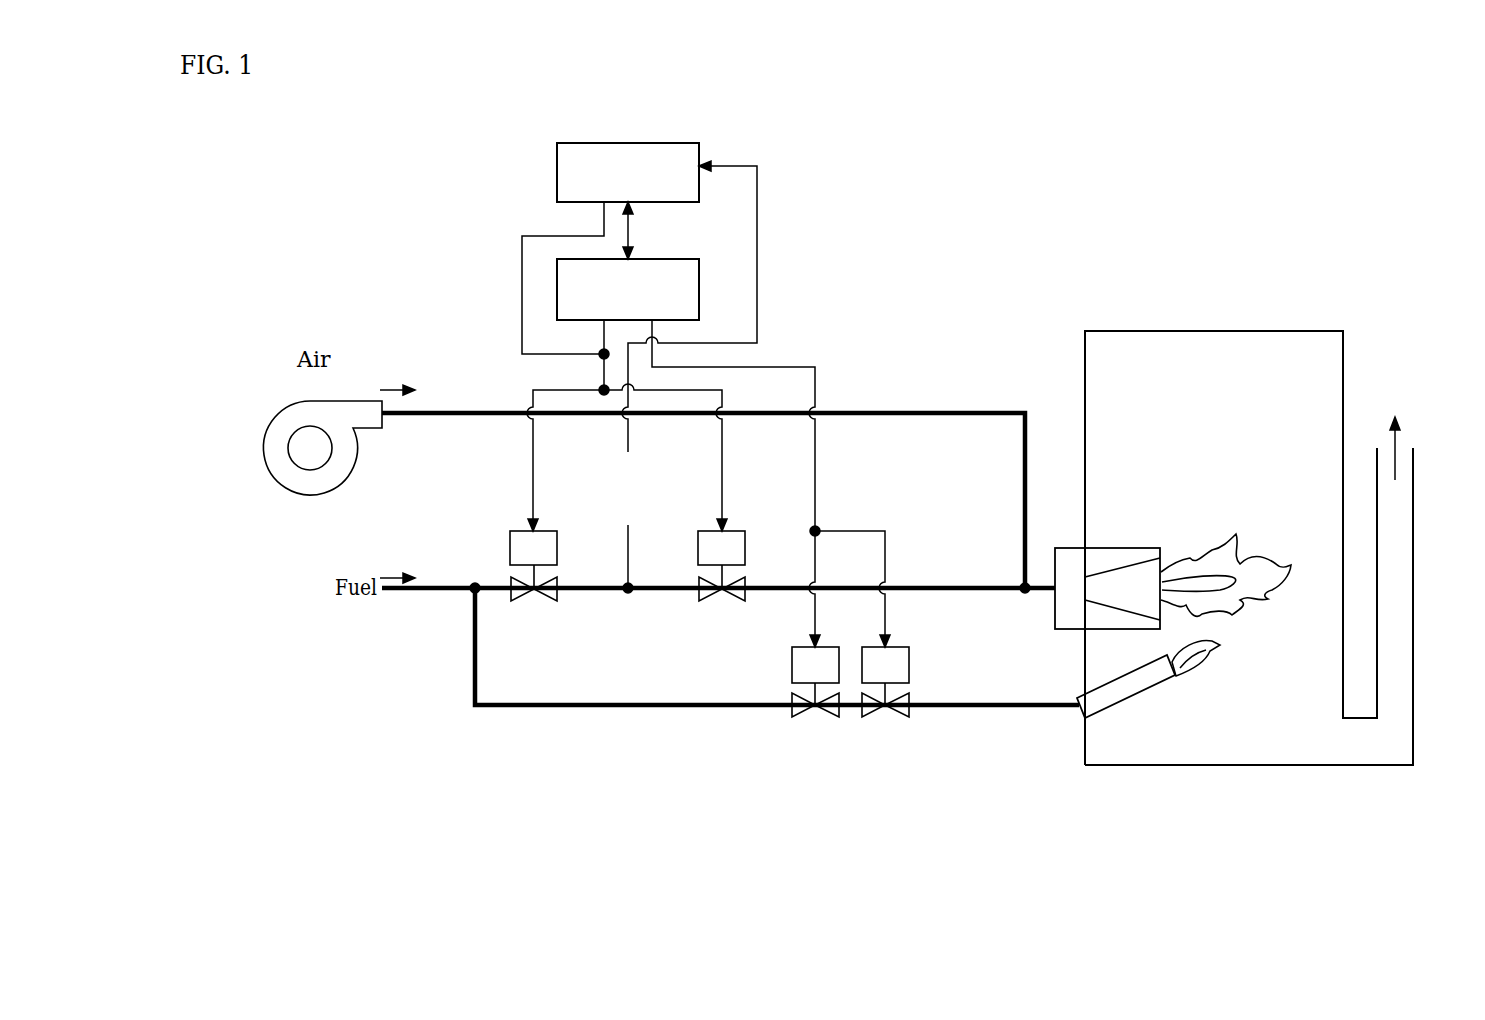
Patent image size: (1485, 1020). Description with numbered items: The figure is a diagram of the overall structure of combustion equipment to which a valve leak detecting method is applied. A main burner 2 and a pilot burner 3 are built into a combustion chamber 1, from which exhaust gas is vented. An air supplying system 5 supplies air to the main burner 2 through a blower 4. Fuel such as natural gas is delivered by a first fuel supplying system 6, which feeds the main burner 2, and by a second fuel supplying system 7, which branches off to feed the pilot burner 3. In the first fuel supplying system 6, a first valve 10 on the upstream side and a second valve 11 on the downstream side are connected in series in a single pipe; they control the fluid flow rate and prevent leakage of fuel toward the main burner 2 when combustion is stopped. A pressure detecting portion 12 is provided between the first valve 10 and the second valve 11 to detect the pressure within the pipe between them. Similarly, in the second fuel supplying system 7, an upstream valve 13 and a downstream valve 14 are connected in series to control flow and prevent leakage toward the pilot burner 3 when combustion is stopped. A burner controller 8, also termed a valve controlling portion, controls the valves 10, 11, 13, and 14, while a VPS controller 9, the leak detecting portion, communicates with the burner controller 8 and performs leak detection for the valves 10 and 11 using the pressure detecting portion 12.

The combustion chamber 1 is at (1290, 331).
The main burner 2 is at (1118, 548).
The pilot burner 3 is at (1147, 690).
The blower 4 is at (263, 449).
The air supplying system 5 is at (478, 411).
The first fuel supplying system 6 is at (934, 586).
The second fuel supplying system 7 is at (630, 703).
The burner controller 8 is at (668, 259).
The VPS controller 9 is at (668, 143).
The first valve 10 is at (509, 548).
The second valve 11 is at (747, 548).
The pressure detecting portion 12 is at (657, 449).
The valve 13 is at (790, 666).
The valve 14 is at (910, 667).